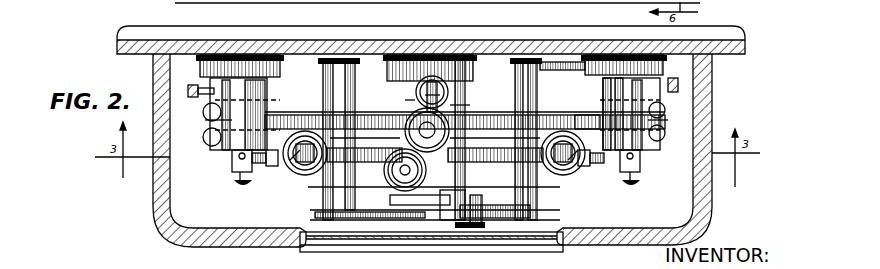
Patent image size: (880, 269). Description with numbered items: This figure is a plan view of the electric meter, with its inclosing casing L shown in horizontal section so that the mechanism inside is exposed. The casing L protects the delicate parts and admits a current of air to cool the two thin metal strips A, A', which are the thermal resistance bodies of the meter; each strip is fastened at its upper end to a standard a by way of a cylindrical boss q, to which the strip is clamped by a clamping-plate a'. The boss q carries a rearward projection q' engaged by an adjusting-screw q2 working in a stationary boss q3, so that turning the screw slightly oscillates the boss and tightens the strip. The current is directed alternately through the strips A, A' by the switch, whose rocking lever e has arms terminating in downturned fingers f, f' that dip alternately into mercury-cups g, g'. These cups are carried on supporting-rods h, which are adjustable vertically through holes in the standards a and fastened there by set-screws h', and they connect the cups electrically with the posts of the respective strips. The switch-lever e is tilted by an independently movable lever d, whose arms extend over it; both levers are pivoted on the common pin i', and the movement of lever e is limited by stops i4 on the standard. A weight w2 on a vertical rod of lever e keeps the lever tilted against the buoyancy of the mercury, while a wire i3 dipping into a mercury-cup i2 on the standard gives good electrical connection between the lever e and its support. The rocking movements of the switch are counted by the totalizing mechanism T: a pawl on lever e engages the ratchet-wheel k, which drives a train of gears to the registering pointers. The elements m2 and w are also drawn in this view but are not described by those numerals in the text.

The casing L is at (431, 136).
The totalizing mechanism T is at (393, 232).
The stationary boss q3 is at (218, 78).
The top gear block m2 is at (512, 64).
The metal strip A is at (465, 116).
The metal strip A' is at (582, 113).
The cylindrical boss q is at (434, 128).
The adjusting-screw q2 is at (214, 104).
The rearward projection q' is at (447, 117).
The clamping-plate a' is at (437, 125).
The standard a is at (434, 169).
The set-screw h' is at (442, 191).
The supporting-rod h is at (428, 173).
The mercury-cup g is at (299, 161).
The mercury-cup g' is at (569, 154).
The finger f is at (290, 176).
The finger f' is at (575, 173).
The lever d is at (435, 155).
The rocking lever e is at (435, 134).
The weight w2 is at (427, 130).
The worm wheel w is at (405, 170).
The mercury-cup i2 is at (448, 94).
The wire or rod i3 is at (428, 97).
The stops i4 is at (412, 101).
The ratchet-wheel k is at (434, 203).
The pivotal pin i' is at (479, 232).